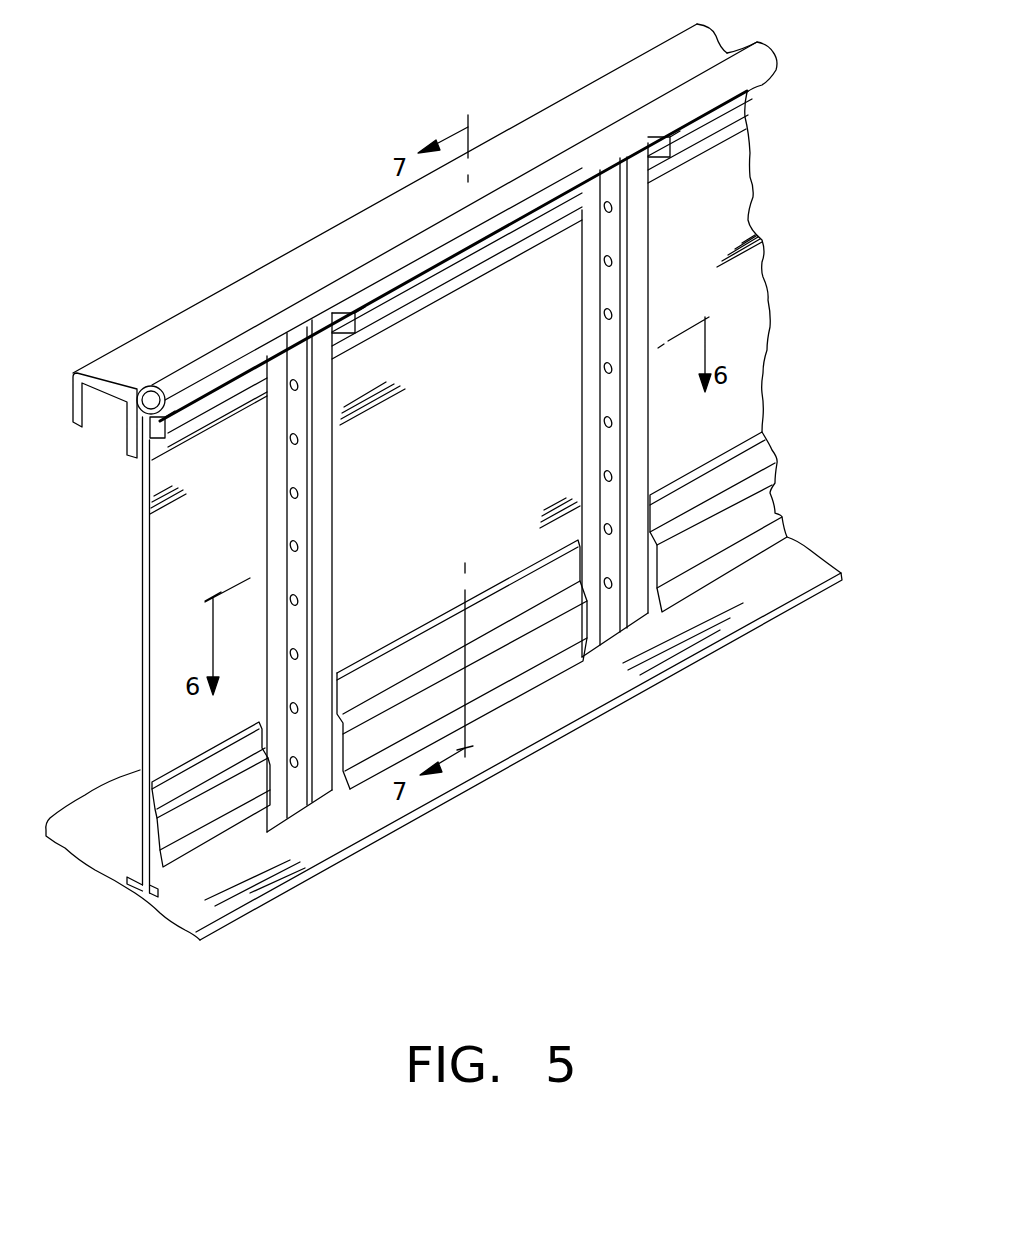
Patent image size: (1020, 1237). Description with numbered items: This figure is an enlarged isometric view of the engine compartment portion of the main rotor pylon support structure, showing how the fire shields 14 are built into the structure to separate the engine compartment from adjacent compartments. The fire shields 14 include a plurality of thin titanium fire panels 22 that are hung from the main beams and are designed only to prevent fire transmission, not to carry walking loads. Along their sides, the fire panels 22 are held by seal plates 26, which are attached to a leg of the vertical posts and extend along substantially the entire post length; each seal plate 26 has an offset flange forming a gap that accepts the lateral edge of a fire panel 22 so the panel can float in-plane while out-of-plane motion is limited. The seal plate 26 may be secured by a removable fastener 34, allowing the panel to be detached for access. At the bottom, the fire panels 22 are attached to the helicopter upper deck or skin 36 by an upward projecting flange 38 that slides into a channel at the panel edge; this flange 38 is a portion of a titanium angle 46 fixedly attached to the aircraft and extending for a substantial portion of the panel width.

The fire shields 14 is at (756, 198).
The fire panel 22 is at (491, 433).
The seal plate 26 is at (322, 590).
The removable fastener 34 is at (295, 768).
The upper deck or skin 36 is at (797, 562).
The upward projecting flange 38 is at (343, 772).
The angle 46 is at (194, 863).